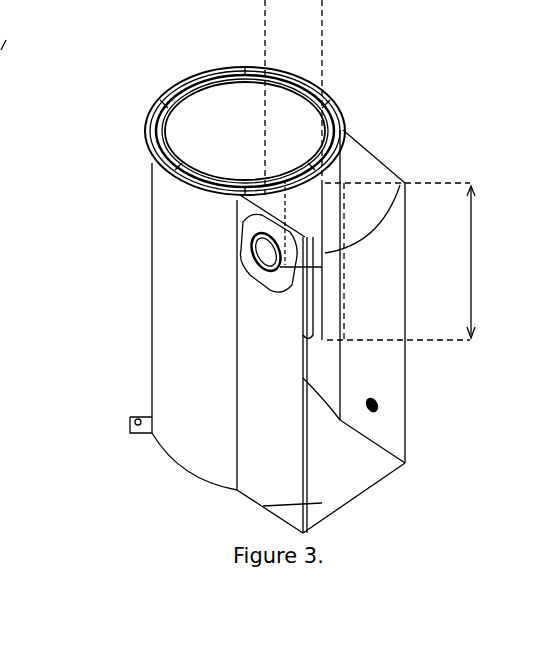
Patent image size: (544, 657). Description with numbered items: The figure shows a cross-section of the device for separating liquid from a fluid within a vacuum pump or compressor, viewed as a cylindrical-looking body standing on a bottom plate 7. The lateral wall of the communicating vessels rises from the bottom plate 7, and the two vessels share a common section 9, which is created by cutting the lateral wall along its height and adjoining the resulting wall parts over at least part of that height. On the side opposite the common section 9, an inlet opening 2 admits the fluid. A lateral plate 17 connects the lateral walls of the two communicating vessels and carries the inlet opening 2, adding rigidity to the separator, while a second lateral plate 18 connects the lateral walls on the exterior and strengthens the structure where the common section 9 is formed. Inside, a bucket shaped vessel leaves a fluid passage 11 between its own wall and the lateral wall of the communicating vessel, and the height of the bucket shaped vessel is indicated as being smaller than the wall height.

The inlet opening 2 is at (247, 255).
The bottom plate 7 is at (283, 505).
The common section 9 is at (400, 178).
The fluid passage 11 is at (262, 272).
The lateral plate 17 is at (257, 407).
The second lateral plate 18 is at (360, 170).